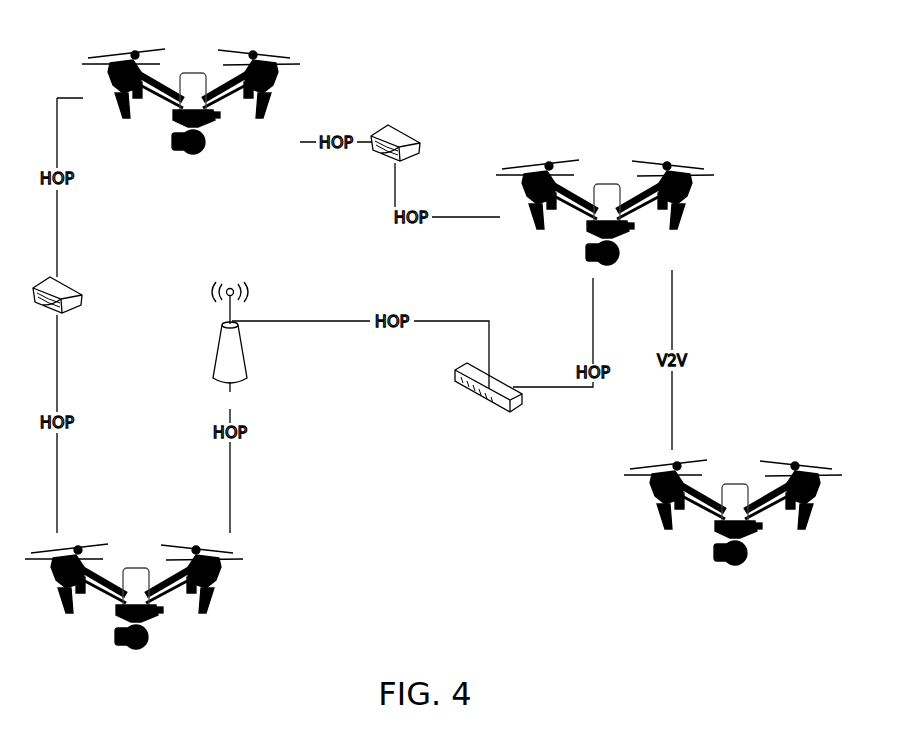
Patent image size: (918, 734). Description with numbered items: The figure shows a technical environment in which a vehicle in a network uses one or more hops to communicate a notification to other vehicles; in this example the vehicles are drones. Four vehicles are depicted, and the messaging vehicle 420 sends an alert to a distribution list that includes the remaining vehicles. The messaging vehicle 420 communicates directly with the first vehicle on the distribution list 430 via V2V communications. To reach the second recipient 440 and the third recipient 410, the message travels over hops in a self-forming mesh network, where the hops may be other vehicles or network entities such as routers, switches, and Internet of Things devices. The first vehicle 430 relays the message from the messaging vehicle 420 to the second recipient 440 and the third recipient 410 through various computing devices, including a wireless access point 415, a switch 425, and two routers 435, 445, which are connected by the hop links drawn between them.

The vehicle 410 is at (134, 596).
The wireless access point 415 is at (230, 346).
The messaging vehicle 420 is at (733, 513).
The switch 425 is at (488, 400).
The first vehicle on the distribution list 430 is at (605, 198).
The router 435 is at (57, 309).
The vehicle 440 is at (191, 101).
The router 445 is at (395, 157).